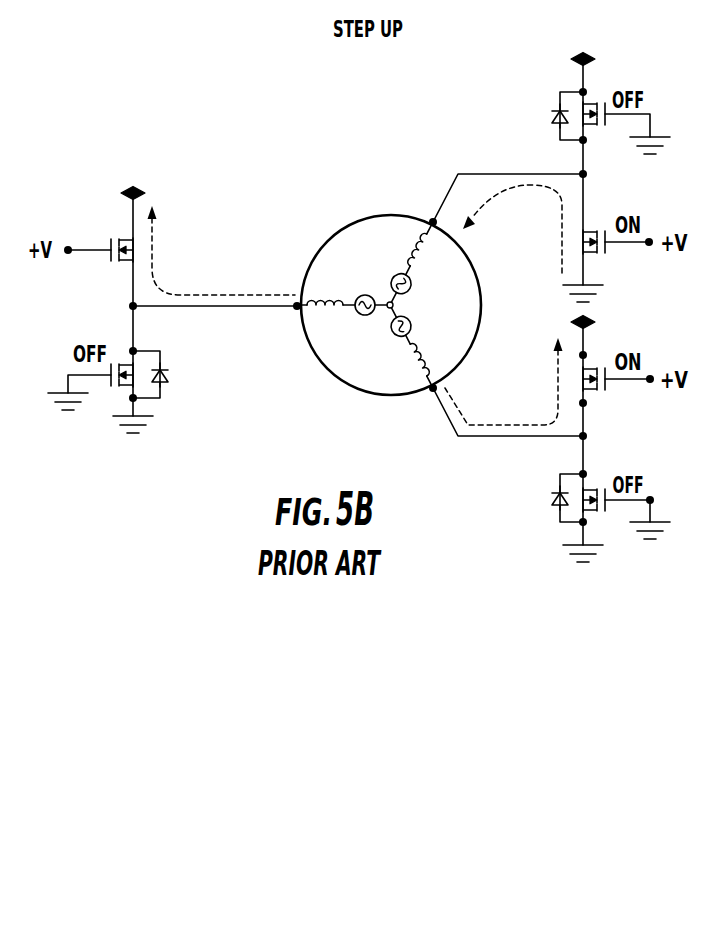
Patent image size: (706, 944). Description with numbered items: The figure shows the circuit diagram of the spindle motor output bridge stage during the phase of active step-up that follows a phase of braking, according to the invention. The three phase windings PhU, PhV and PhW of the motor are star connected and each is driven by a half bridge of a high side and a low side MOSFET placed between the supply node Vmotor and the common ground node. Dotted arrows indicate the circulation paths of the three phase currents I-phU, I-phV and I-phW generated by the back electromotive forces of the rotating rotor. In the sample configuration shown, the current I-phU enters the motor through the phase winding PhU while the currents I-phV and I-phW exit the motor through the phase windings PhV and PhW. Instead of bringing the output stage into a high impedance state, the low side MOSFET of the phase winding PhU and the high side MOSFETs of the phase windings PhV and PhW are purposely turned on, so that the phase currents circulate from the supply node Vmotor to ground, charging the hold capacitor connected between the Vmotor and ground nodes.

The supply node Vmotor is at (388, 175).
The phase winding U PhU is at (417, 262).
The phase winding V PhV is at (342, 290).
The phase winding W PhW is at (402, 347).
The phase current I-phU is at (512, 229).
The phase current I-phV is at (222, 250).
The phase current I-phW is at (504, 404).